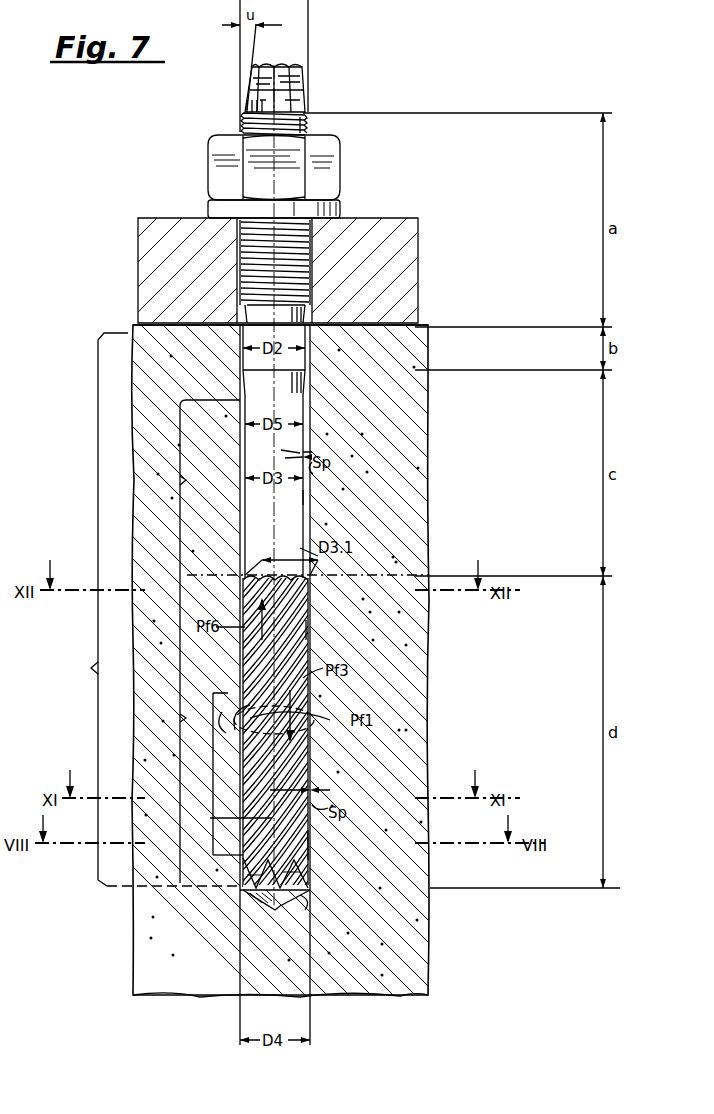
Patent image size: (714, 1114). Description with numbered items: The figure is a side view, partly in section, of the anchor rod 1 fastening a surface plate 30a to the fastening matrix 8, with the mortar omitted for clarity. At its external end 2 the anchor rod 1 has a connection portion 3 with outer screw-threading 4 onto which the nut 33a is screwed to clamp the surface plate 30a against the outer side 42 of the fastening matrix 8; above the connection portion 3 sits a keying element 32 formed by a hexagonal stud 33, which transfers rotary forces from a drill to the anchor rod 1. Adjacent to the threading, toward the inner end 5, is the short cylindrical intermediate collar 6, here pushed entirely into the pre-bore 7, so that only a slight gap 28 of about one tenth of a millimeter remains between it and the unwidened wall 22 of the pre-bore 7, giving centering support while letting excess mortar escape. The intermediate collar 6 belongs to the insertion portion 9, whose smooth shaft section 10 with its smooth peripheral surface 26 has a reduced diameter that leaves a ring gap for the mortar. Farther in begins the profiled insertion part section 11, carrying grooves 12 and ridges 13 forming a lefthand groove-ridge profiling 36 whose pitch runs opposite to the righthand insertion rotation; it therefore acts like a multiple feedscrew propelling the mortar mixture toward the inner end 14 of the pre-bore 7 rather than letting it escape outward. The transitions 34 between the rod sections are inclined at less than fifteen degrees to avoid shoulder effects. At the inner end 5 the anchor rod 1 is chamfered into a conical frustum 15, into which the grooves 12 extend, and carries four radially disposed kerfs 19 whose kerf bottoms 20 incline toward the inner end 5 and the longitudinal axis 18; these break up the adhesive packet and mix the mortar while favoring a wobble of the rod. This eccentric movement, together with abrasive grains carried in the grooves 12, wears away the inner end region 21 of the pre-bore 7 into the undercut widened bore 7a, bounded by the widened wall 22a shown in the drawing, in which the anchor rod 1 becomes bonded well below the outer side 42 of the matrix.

The anchor rod 1 is at (240, 92).
The external end 2 is at (292, 66).
The connection portion 3 is at (308, 127).
The outer screw-threading 4 is at (245, 124).
The inner end 5 is at (306, 900).
The intermediate collar 6 is at (303, 360).
The pre-bore 7 is at (303, 522).
The widened bore 7a is at (312, 840).
The fastening matrix 8 is at (428, 405).
The insertion portion 9 is at (100, 609).
The smooth shaft section 10 is at (178, 480).
The profiled insertion part section 11 is at (178, 718).
The grooves 12 is at (243, 670).
The ridges 13 is at (296, 600).
The inner end of the pre-bore 14 is at (262, 905).
The conical frustum 15 is at (312, 904).
The longitudinal axis 18 is at (230, 817).
The kerfs 19 is at (310, 877).
The kerf bottom 20 is at (276, 912).
The inner end region of the pre-bore 21 is at (213, 771).
The wall of the pre-bore 22 is at (282, 454).
The lower gap 22a is at (310, 772).
The smooth peripheral surface 26 is at (305, 499).
The gap 28 is at (311, 336).
The surface plate 30a is at (410, 246).
The keying element 32 is at (303, 93).
The hexagonal stud 33 is at (303, 72).
The nut 33a is at (338, 158).
The transitions 34 is at (305, 106).
The groove-ridge profiling 36 is at (306, 628).
The outer side of the fastening matrix 42 is at (422, 327).